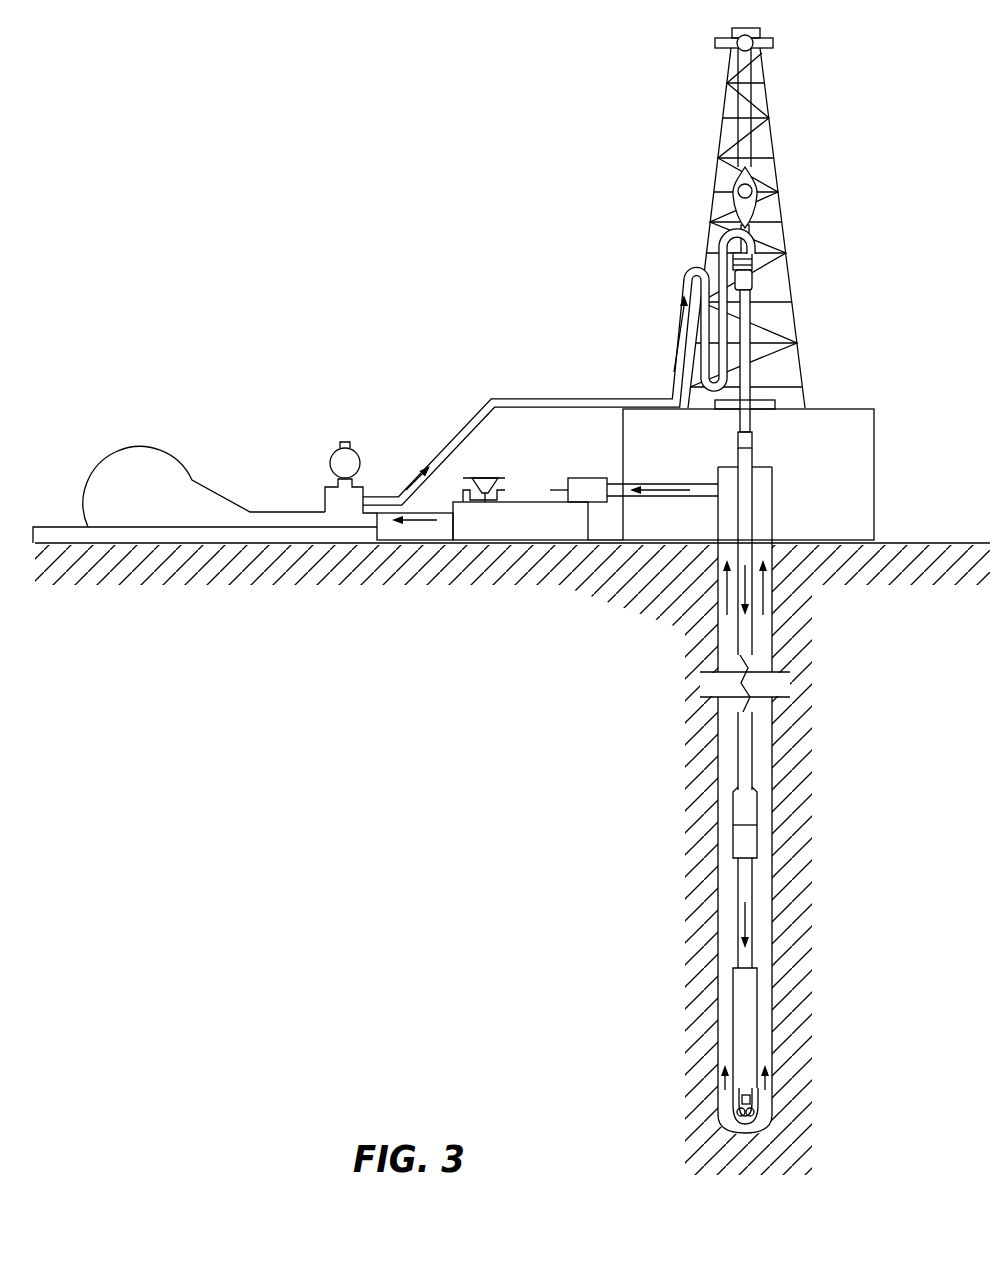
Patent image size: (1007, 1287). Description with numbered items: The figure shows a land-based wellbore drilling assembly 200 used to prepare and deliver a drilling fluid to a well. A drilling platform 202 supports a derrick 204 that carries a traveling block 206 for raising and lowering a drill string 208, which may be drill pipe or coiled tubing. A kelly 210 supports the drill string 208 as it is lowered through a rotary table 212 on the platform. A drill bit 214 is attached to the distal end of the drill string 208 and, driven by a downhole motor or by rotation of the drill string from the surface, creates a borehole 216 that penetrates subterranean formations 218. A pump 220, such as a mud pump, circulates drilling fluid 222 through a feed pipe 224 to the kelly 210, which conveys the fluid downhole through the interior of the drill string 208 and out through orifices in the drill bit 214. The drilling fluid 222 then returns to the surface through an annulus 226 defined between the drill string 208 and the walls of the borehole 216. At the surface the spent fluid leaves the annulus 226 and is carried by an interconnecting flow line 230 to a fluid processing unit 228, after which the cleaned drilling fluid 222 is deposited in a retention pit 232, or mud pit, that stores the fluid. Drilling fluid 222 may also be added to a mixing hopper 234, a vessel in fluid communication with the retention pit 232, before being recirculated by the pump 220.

The wellbore drilling assembly 200 is at (392, 90).
The drilling platform 202 is at (876, 418).
The derrick 204 is at (771, 138).
The traveling block 206 is at (758, 183).
The drill string 208 is at (748, 652).
The kelly 210 is at (752, 292).
The rotary table 212 is at (778, 403).
The drill bit 214 is at (766, 1100).
The borehole 216 is at (775, 750).
The subterranean formations 218 is at (573, 775).
The pump 220 is at (162, 491).
The drilling fluid 222 is at (388, 500).
The feed pipe 224 is at (492, 398).
The annulus 226 is at (764, 918).
The fluid processing unit 228 is at (583, 483).
The flow line 230 is at (688, 496).
The retention pit 232 is at (571, 541).
The mixing hopper 234 is at (483, 494).